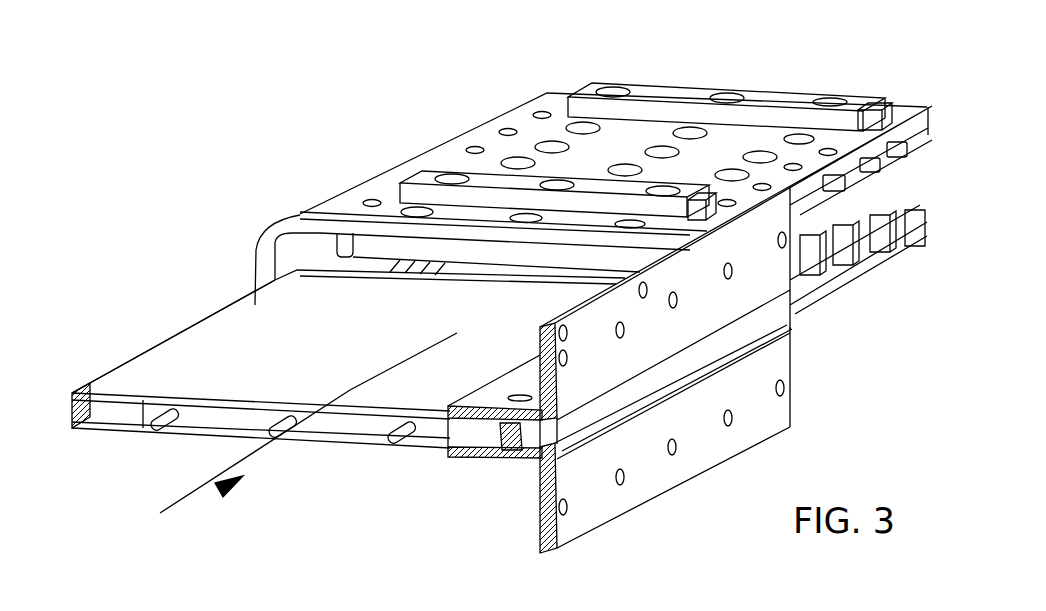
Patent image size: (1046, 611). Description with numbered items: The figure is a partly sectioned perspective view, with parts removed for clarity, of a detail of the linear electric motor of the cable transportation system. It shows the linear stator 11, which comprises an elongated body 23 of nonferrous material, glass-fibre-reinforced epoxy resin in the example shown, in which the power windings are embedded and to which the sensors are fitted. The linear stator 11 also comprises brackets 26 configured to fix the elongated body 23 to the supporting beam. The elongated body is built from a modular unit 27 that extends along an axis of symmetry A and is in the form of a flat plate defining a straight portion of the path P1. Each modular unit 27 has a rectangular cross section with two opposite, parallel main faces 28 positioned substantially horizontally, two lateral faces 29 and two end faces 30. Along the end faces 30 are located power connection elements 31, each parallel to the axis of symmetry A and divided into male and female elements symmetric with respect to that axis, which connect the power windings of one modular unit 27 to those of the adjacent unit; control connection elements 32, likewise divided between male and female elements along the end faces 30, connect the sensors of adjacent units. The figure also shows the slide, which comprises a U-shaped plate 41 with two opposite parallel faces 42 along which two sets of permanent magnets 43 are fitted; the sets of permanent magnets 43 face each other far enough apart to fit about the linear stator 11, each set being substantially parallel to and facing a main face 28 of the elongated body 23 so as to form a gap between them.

The linear stator 11 is at (116, 306).
The elongated body 23 is at (163, 295).
The brackets 26 is at (773, 293).
The modular unit 27 is at (218, 238).
The main faces 28 is at (235, 318).
The lateral faces 29 is at (108, 362).
The end faces 30 is at (380, 274).
The power connection elements 31 is at (173, 420).
The control connection elements 32 is at (103, 398).
The U-shaped plate 41 is at (549, 98).
The parallel faces 42 is at (925, 138).
The permanent magnets 43 is at (797, 200).
The axis of symmetry A is at (185, 478).
The path P1 is at (188, 500).